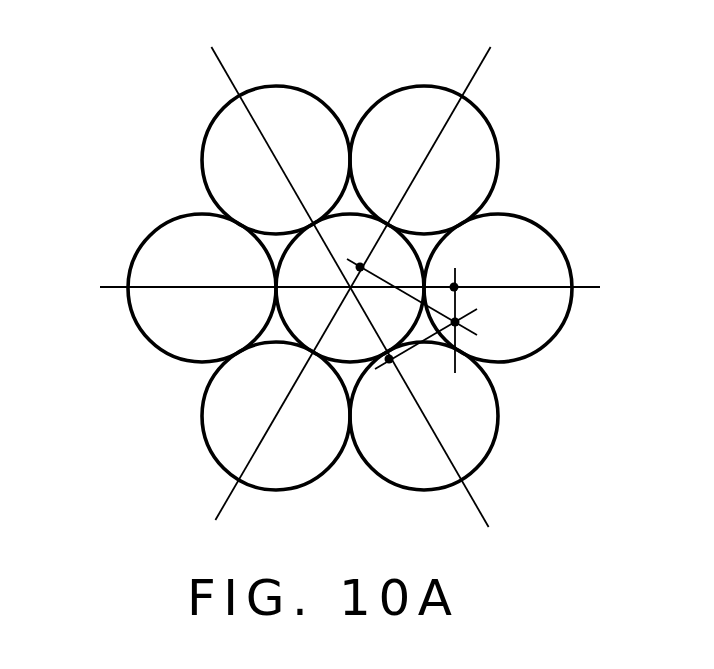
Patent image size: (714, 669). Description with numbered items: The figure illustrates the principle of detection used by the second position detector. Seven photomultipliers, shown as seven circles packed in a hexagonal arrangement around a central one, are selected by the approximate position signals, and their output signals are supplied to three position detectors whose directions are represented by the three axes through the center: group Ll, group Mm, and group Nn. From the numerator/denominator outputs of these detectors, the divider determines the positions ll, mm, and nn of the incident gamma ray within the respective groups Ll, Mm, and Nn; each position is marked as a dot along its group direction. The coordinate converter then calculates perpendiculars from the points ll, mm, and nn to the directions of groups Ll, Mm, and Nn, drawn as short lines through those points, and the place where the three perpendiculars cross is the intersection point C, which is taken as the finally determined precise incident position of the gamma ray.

The group Nn is at (341, 272).
The group Ll LL is at (362, 270).
The group Mm is at (322, 282).
The position ll is at (360, 267).
The position mm is at (455, 287).
The position nn is at (389, 359).
The intersection point C is at (455, 322).